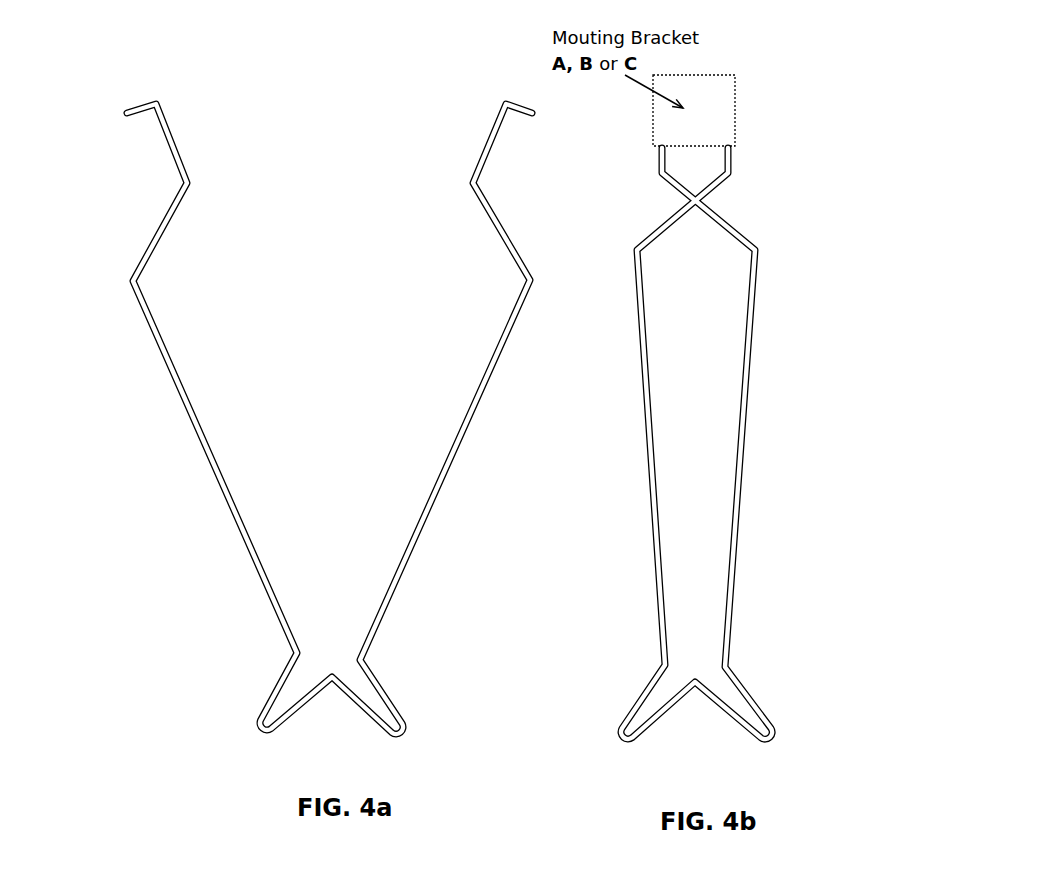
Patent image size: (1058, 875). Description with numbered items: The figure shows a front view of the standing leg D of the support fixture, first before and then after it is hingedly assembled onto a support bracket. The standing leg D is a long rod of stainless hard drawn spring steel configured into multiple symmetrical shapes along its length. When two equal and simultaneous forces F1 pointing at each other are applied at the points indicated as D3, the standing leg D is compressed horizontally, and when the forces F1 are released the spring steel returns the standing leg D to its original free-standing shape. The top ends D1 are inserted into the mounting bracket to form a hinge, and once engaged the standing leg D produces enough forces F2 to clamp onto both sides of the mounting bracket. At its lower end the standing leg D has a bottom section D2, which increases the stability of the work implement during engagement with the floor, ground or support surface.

In FIG. 4A, the standing leg D is at (445, 507).
In FIG. 4B, the standing leg D is at (743, 495).
In FIG. 4A, the top ends D1 is at (495, 112).
In FIG. 4A, the bottom section D2 is at (413, 720).
In FIG. 4B, the bottom section D2 is at (615, 713).
In FIG. 4A, the points D3 is at (127, 272).
In FIG. 4B, the points D3 is at (587, 220).
In FIG. 4A, the forces F1 is at (127, 282).
In FIG. 4B, the forces F2 is at (653, 154).